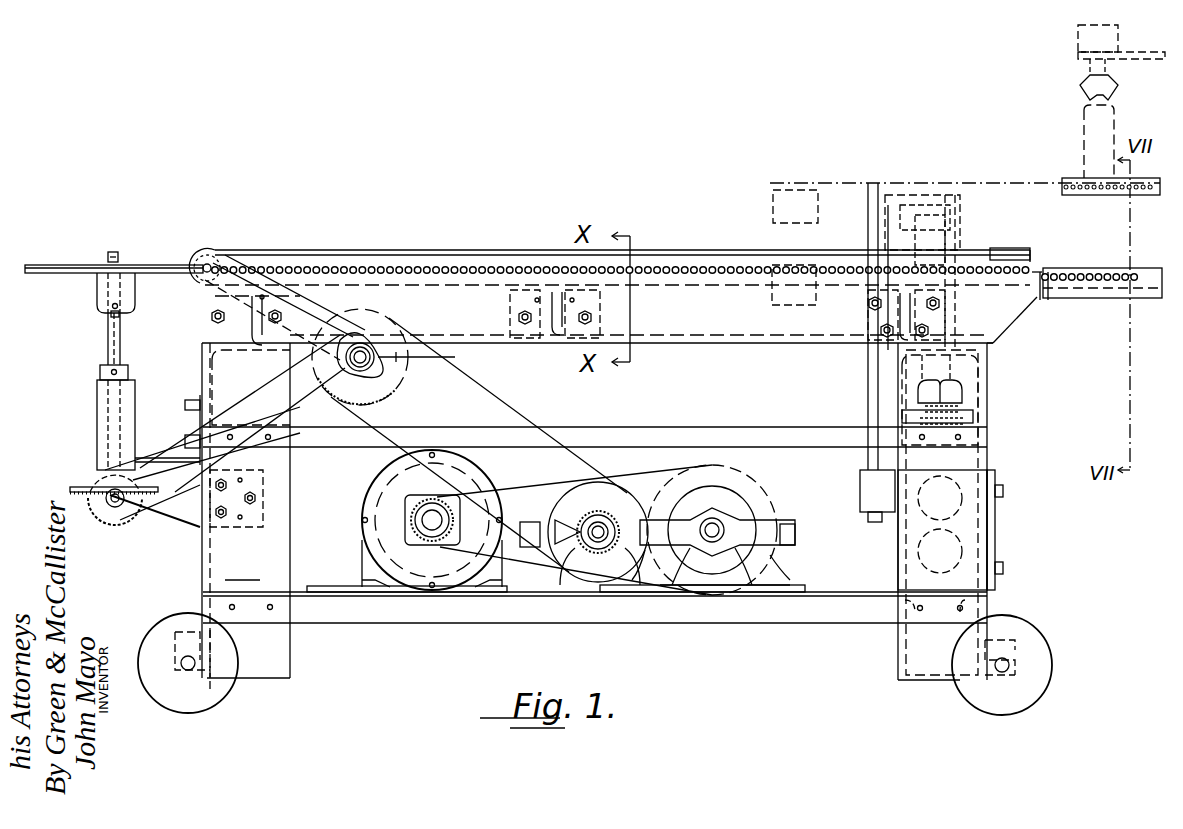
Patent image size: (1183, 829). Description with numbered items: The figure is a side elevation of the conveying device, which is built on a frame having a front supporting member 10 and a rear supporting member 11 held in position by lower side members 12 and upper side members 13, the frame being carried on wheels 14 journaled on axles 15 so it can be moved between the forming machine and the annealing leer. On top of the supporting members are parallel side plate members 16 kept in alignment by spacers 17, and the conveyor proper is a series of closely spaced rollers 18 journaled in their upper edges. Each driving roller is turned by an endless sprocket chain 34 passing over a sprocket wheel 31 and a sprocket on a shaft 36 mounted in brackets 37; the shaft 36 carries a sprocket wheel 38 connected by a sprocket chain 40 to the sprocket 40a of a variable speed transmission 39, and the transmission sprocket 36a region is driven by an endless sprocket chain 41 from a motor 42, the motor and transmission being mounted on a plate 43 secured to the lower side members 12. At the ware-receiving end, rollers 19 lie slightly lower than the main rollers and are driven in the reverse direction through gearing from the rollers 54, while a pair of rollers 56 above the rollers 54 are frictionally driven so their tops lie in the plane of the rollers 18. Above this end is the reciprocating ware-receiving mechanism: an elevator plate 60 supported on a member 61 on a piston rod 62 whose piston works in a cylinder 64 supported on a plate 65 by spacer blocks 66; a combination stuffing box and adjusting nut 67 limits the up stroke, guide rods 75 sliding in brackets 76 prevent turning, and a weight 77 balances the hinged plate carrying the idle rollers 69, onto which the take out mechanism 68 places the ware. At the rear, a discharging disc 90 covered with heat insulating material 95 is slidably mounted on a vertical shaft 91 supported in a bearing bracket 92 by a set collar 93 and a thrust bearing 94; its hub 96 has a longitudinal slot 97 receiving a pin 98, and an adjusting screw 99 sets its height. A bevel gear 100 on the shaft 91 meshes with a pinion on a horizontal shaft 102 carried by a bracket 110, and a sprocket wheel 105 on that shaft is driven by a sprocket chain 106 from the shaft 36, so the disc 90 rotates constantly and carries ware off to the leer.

The front supporting member 10 is at (975, 458).
The rear supporting member 11 is at (230, 567).
The lower side members 12 is at (566, 604).
The upper side members 13 is at (678, 445).
The wheels 14 is at (212, 708).
The axles 15 is at (185, 668).
The side plate members 16 is at (677, 328).
The spacers 17 is at (245, 326).
The rollers 18 is at (510, 266).
The rollers 19 is at (1125, 282).
The sprocket wheel 31 is at (206, 260).
The endless sprocket chain 34 is at (290, 310).
The shaft 36 is at (372, 366).
The sprocket 36a is at (600, 530).
The brackets 37 is at (455, 357).
The sprocket wheel 38 is at (375, 335).
The variable speed transmission 39 is at (765, 505).
The sprocket chain 40 is at (498, 424).
The sprocket 40a is at (560, 485).
The endless sprocket chain 41 is at (598, 482).
The motor 42 is at (364, 512).
The plate 43 is at (335, 592).
The rollers 54 is at (1040, 282).
The rollers 56 is at (1045, 278).
The elevator plate 60 is at (920, 183).
The member 61 is at (962, 212).
The piston rod 62 is at (956, 238).
The cylinder 64 is at (972, 528).
The plate 65 is at (997, 508).
The spacer blocks 66 is at (930, 509).
The combination stuffing box and adjusting nut 67 is at (975, 415).
The forming machine take out mechanism 68 is at (1113, 75).
The idle rollers 69 is at (1078, 270).
The guide rods 75 is at (879, 240).
The brackets 76 is at (888, 520).
The weight 77 is at (773, 203).
The disc 90 is at (62, 263).
The vertical shaft 91 is at (108, 343).
The bearing bracket 92 is at (165, 395).
The set collar 93 is at (100, 372).
The thrust bearing 94 is at (98, 382).
The heat insulating material 95 is at (80, 263).
The hub 96 is at (97, 290).
The longitudinal slot 97 is at (119, 314).
The pin 98 is at (118, 306).
The adjusting screw 99 is at (118, 255).
The bevel gear 100 is at (80, 488).
The horizontal shaft 102 is at (113, 502).
The sprocket wheel 105 is at (90, 505).
The sprocket chain 106 is at (245, 400).
The bracket 110 is at (177, 515).